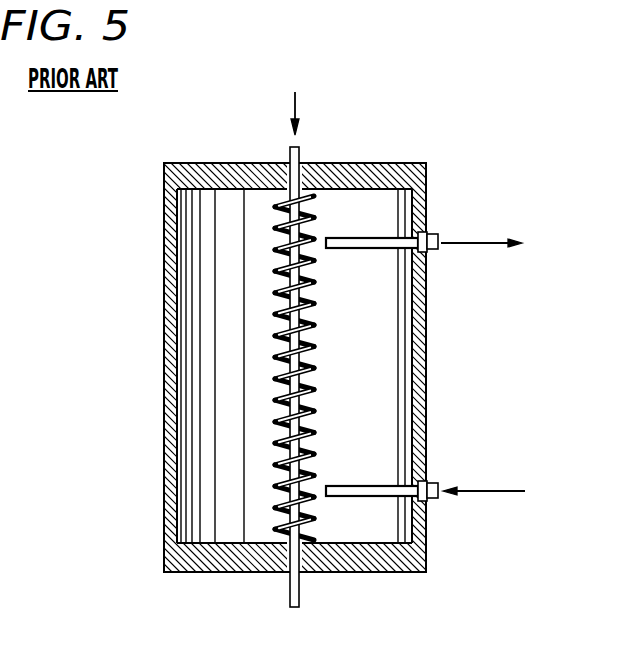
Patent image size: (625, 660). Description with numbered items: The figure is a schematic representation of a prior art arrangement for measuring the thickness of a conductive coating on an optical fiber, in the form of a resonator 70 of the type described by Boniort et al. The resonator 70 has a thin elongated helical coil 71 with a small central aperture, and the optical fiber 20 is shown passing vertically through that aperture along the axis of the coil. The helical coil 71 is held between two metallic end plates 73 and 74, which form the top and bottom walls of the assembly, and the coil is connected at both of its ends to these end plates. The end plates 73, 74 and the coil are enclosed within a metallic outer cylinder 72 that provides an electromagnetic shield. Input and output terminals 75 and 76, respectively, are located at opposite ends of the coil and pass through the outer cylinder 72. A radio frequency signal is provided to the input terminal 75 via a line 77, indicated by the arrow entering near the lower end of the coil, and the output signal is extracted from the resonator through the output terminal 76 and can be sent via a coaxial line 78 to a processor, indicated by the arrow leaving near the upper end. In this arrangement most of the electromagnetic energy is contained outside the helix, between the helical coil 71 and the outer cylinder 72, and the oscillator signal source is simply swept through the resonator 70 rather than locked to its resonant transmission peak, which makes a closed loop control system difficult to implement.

The resonator 70 is at (358, 95).
The helical coil 71 is at (300, 385).
The metallic outer cylinder 72 is at (428, 350).
The metallic end plate 73 is at (380, 163).
The metallic end plate 74 is at (366, 573).
The input terminal 75 is at (374, 484).
The output terminal 76 is at (370, 251).
The line 77 is at (493, 489).
The coaxial line 78 is at (474, 242).
The pipe 20 is at (290, 598).